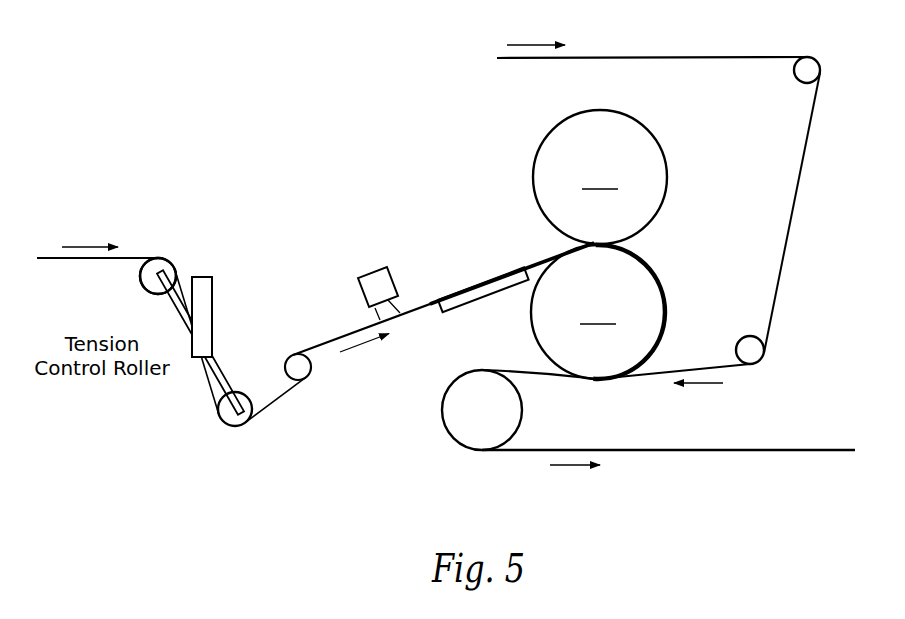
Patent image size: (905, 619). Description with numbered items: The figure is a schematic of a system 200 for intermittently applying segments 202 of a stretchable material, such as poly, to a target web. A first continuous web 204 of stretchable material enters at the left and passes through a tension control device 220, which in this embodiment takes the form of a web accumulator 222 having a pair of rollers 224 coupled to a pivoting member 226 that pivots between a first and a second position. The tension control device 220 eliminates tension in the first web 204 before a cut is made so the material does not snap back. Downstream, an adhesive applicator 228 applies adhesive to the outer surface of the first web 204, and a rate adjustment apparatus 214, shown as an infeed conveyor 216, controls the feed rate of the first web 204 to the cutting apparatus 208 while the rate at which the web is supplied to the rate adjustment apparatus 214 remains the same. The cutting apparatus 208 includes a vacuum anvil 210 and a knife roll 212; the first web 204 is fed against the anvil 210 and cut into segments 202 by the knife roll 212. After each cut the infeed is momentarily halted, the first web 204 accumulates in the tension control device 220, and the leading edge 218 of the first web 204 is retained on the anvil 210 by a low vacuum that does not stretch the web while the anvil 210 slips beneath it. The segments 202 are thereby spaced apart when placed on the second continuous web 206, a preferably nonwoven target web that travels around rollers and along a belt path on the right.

The system 200 is at (178, 115).
The segments 202 is at (647, 255).
The first continuous web 204 is at (136, 258).
The second continuous web 206 is at (789, 222).
The cutting apparatus 208 is at (520, 151).
The anvil 210 is at (598, 312).
The knife roll 212 is at (600, 177).
The rate adjustment apparatus 214 is at (496, 334).
The infeed conveyor 216 is at (475, 295).
The leading edge 218 is at (585, 243).
The tension control device 220 is at (233, 317).
The web accumulator 222 is at (198, 358).
The pair of rollers 224 is at (153, 283).
The pivoting member 226 is at (175, 318).
The adhesive applicator 228 is at (378, 278).